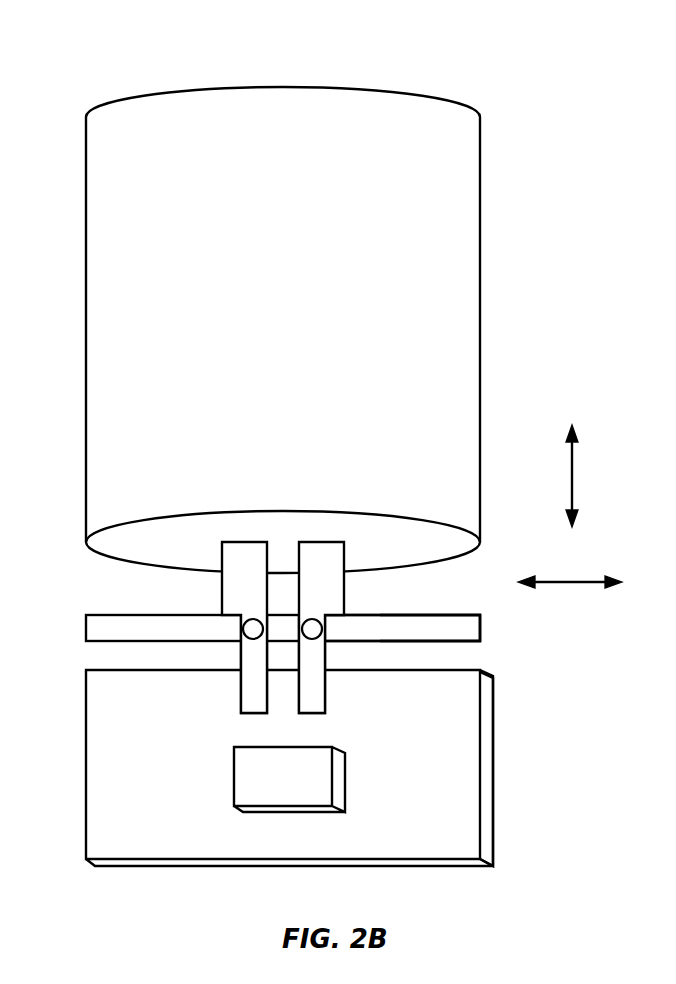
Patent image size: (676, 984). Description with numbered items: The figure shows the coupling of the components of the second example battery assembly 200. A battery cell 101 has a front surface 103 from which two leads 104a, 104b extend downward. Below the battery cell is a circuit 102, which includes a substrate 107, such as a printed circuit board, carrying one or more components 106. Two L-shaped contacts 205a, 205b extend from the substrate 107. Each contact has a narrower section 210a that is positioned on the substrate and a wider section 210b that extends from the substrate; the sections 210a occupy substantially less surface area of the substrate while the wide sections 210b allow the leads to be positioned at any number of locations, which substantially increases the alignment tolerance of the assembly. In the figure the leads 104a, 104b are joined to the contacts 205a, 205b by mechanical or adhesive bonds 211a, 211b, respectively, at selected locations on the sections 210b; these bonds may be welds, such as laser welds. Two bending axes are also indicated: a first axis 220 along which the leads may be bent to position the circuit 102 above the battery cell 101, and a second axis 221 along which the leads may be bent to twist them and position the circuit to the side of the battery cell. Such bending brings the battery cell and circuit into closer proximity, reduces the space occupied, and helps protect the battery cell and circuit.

The battery assembly 200 is at (492, 57).
The battery cell 101 is at (480, 320).
The front surface 103 is at (460, 547).
The lead 104a is at (221, 588).
The lead 104b is at (345, 588).
The contact 205a is at (108, 615).
The contact 205b is at (470, 614).
The section 210a is at (313, 700).
The section 210b is at (467, 627).
The mechanical or adhesive bond 211a is at (246, 627).
The mechanical or adhesive bond 211b is at (322, 628).
The circuit 102 is at (497, 849).
The substrate 107 is at (488, 753).
The component 106 is at (284, 808).
The second axis 221 is at (572, 478).
The first axis 220 is at (567, 581).